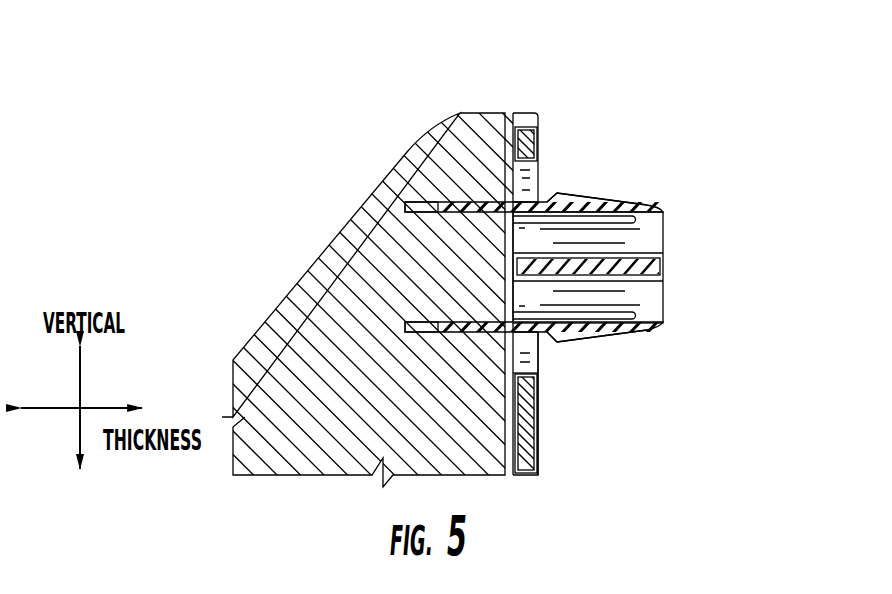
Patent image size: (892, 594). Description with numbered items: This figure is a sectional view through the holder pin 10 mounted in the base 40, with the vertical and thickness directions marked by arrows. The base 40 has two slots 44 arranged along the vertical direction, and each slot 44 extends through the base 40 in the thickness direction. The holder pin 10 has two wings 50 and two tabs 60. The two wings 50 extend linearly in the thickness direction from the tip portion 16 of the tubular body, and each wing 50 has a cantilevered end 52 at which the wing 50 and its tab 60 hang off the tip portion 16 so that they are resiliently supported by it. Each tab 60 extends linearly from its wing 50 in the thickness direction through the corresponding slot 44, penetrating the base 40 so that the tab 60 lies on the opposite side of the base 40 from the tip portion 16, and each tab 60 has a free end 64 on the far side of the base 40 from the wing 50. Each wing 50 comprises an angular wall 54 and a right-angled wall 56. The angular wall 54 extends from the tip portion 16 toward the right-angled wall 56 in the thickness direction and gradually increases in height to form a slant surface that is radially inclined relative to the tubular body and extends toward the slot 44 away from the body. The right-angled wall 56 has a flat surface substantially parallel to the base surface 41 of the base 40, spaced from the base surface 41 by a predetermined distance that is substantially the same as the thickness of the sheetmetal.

The holder pin 10 is at (385, 50).
The tip portion 16 is at (668, 258).
The base 40 is at (527, 447).
The base surface 41 is at (538, 408).
The slot 44 is at (523, 172).
The wing 50 is at (667, 215).
The cantilevered end 52 is at (621, 205).
The angular wall 54 is at (583, 200).
The right-angled wall 56 is at (538, 200).
The tab 60 is at (400, 188).
The free end 64 is at (405, 323).